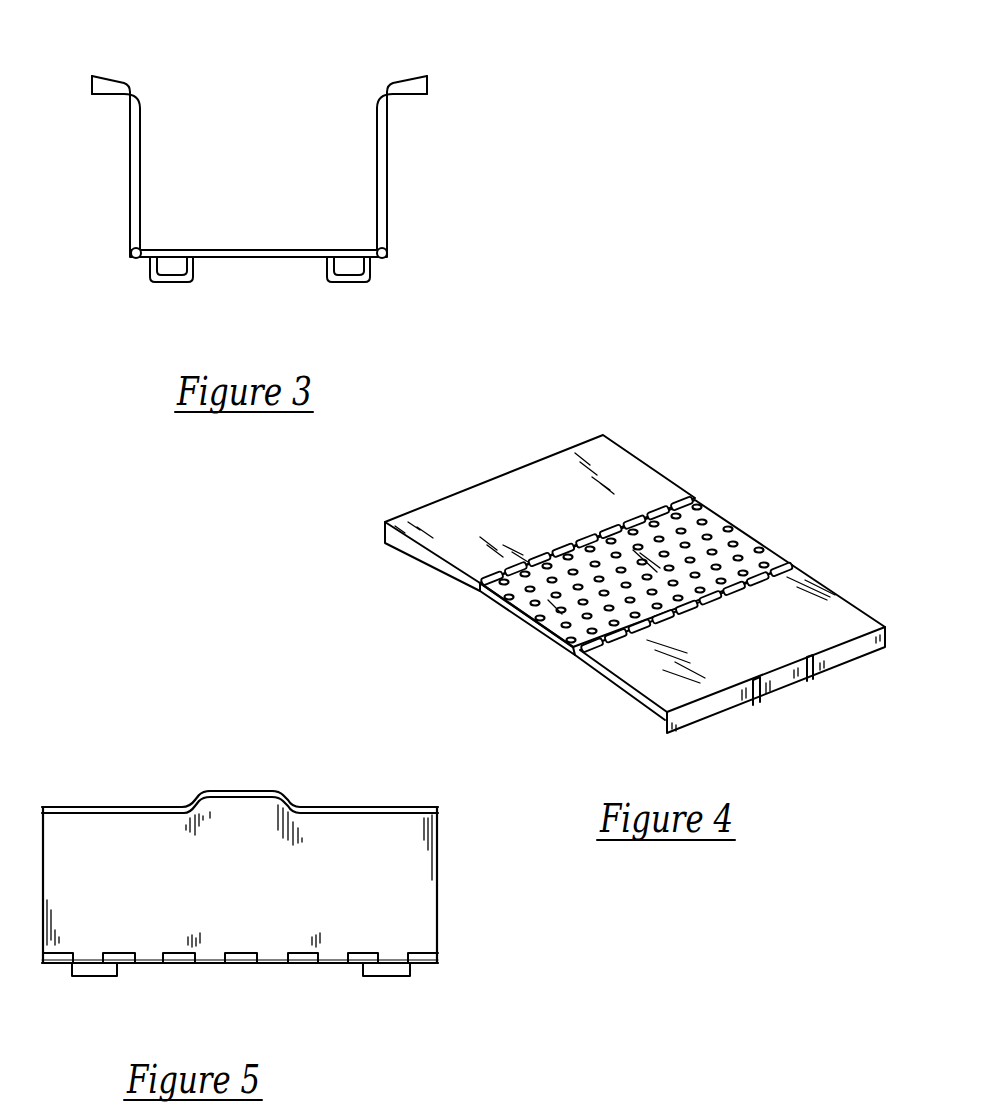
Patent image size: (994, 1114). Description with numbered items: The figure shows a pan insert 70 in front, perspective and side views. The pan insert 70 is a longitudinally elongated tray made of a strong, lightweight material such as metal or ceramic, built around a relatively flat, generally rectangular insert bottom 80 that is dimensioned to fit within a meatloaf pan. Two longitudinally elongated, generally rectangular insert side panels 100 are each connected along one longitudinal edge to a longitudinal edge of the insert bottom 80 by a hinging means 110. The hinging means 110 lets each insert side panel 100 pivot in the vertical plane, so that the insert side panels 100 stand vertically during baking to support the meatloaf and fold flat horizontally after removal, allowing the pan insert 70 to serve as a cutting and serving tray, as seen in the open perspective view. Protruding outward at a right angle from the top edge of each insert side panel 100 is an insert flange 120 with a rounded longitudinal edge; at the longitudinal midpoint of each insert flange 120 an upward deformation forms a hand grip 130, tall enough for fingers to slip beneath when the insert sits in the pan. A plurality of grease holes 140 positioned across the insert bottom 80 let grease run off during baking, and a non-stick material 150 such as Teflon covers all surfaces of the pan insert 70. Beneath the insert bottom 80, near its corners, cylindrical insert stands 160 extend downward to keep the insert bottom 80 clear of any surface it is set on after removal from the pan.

In FIG. 5, the pan insert 70 is at (343, 805).
In FIG. 3, the insert bottom 80 is at (258, 260).
In FIG. 4, the insert bottom 80 is at (760, 540).
In FIG. 5, the insert bottom 80 is at (152, 965).
In FIG. 3, the insert side panel 100 is at (130, 170).
In FIG. 4, the insert side panel 100 is at (603, 453).
In FIG. 5, the insert side panel 100 is at (115, 845).
In FIG. 3, the hinging means 110 is at (127, 255).
In FIG. 4, the hinging means 110 is at (693, 500).
In FIG. 5, the hinging means 110 is at (303, 957).
In FIG. 4, the insert flange 120 is at (843, 657).
In FIG. 3, the hand grip 130 is at (113, 82).
In FIG. 5, the hand grip 130 is at (205, 790).
In FIG. 4, the grease holes 140 is at (728, 525).
In FIG. 4, the non-stick material 150 is at (513, 600).
In FIG. 3, the insert stand 160 is at (160, 282).